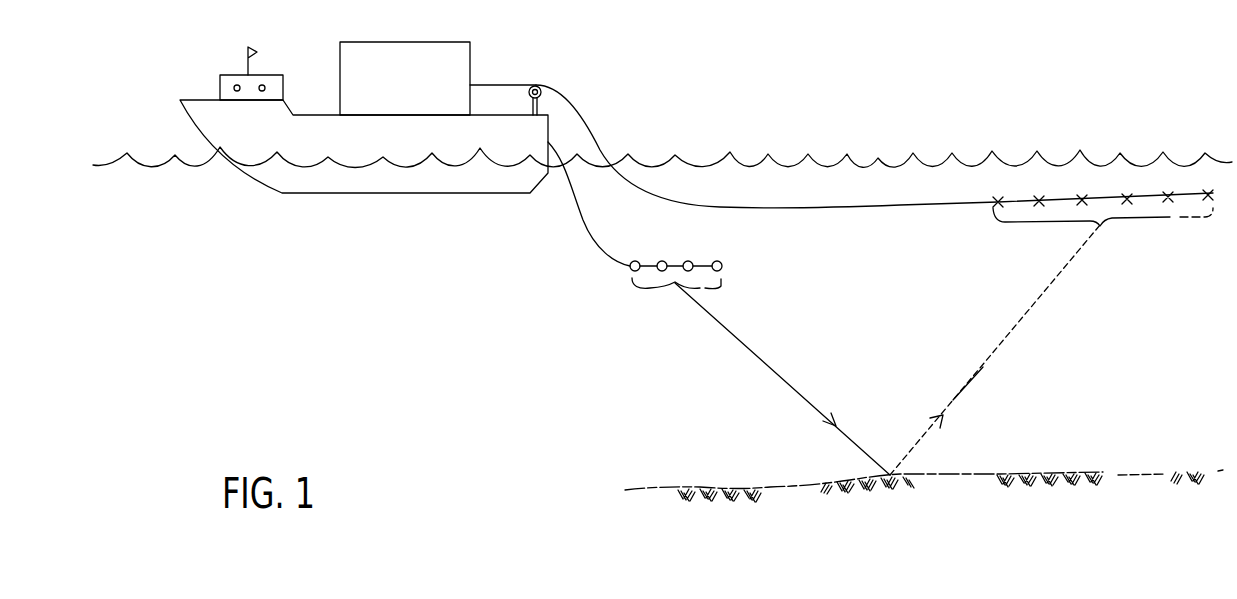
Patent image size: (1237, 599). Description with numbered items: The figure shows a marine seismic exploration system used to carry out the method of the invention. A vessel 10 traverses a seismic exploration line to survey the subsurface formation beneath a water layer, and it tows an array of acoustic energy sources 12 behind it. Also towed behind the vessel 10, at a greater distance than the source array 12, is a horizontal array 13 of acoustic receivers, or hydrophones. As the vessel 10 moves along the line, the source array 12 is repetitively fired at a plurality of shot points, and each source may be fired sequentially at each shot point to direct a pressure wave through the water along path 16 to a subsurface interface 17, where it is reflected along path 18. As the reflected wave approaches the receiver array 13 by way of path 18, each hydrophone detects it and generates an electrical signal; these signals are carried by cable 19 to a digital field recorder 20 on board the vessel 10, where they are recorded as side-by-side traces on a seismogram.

The vessel 10 is at (198, 100).
The array of acoustic energy sources 12 is at (696, 254).
The array of acoustic receivers 13 is at (1172, 189).
The path 16 is at (766, 366).
The subsurface interface 17 is at (720, 490).
The path 18 is at (972, 384).
The cable 19 is at (566, 98).
The digital field recorder 20 is at (411, 42).